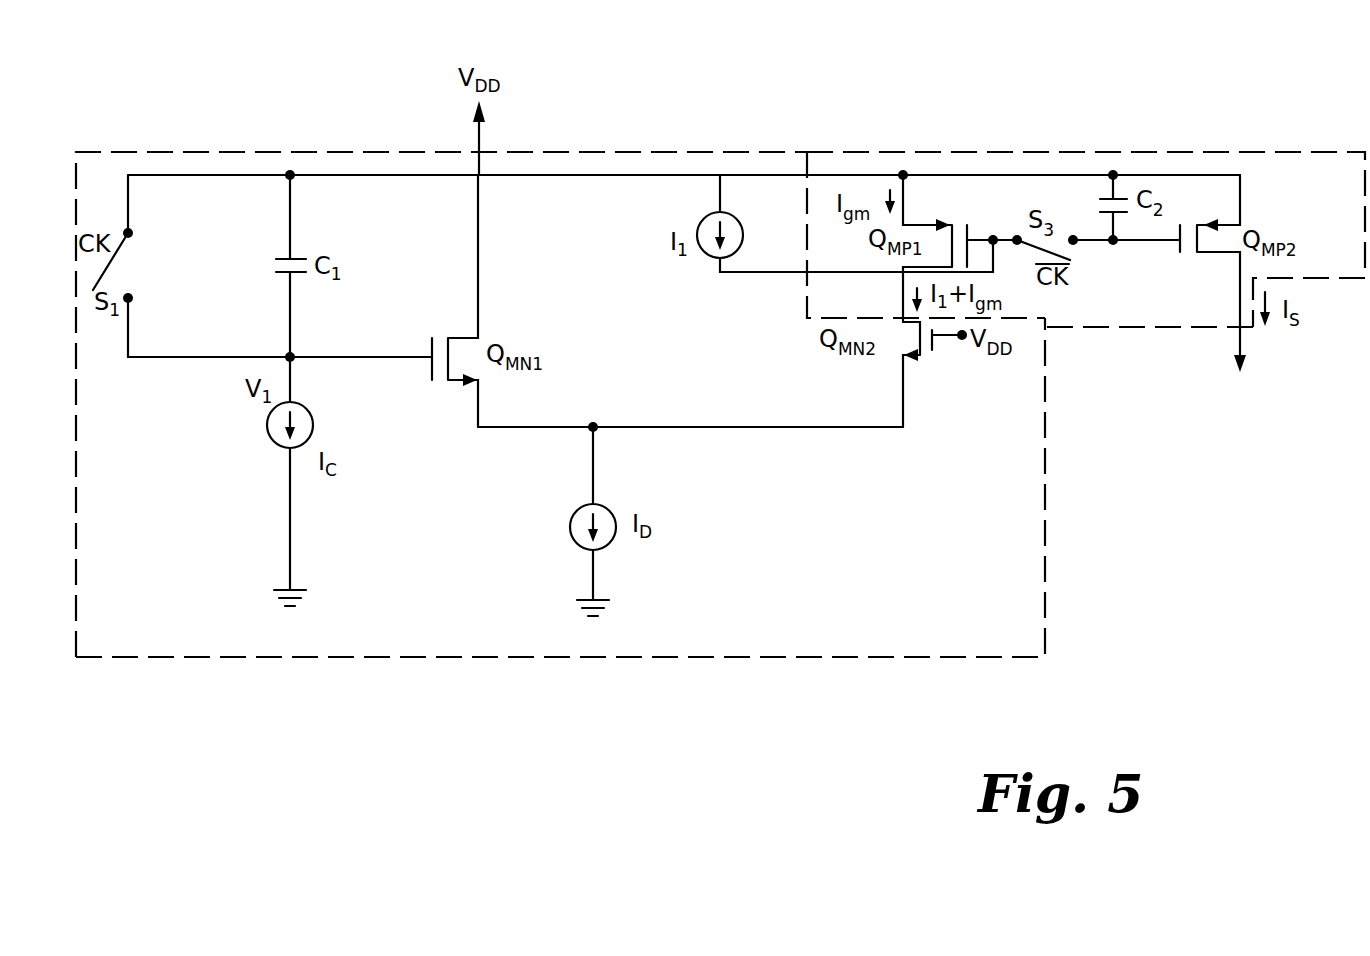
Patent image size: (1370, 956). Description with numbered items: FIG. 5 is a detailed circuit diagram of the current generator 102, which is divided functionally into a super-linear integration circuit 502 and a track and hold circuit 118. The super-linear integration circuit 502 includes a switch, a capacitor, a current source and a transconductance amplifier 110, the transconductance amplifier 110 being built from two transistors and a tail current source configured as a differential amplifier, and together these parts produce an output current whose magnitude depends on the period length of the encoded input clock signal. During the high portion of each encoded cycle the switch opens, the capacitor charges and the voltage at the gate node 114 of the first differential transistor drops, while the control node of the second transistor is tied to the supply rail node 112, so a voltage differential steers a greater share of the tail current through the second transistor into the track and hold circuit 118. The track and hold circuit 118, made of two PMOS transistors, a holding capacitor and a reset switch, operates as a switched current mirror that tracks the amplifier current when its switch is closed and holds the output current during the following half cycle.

The super-linear integration circuit 502 is at (250, 151).
The current generator 102 is at (1010, 110).
The track and hold circuit 118 is at (1162, 328).
The supply rail node 112 is at (370, 176).
The gate node of transistor QMN1 114 is at (375, 356).
The transconductance amplifier 110 is at (768, 448).